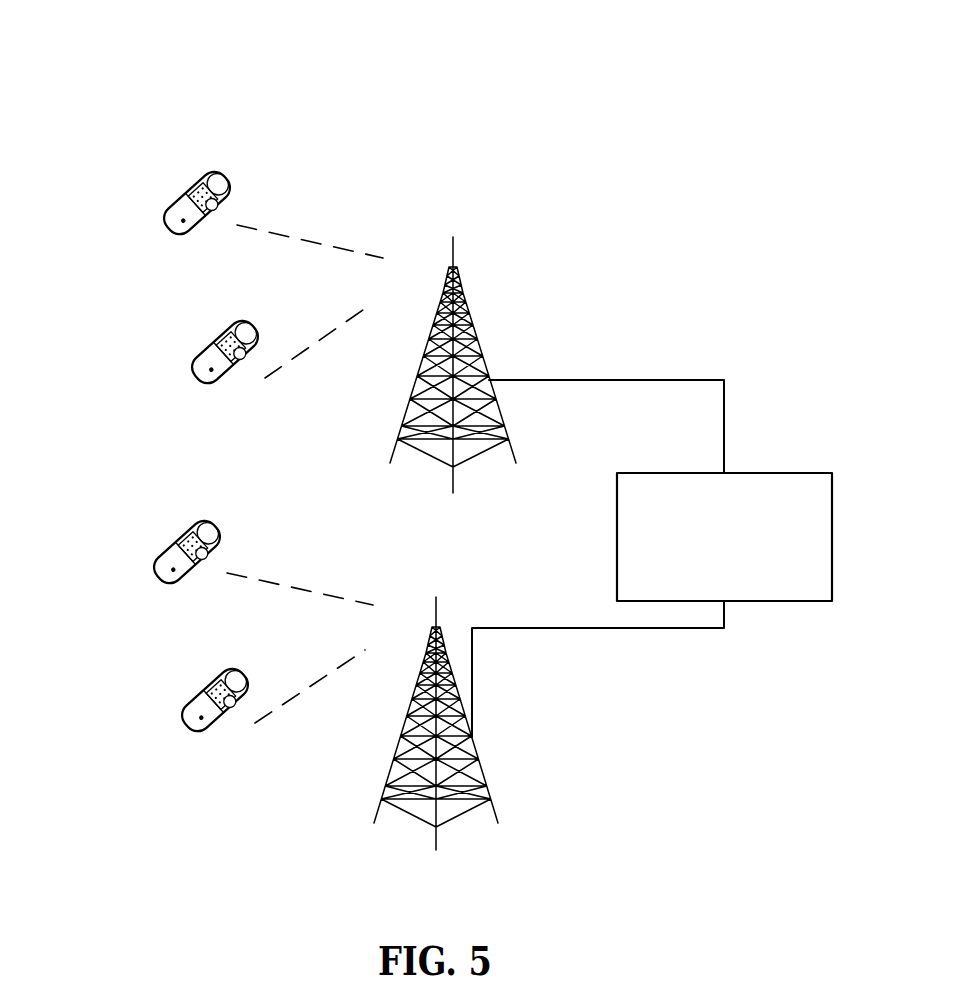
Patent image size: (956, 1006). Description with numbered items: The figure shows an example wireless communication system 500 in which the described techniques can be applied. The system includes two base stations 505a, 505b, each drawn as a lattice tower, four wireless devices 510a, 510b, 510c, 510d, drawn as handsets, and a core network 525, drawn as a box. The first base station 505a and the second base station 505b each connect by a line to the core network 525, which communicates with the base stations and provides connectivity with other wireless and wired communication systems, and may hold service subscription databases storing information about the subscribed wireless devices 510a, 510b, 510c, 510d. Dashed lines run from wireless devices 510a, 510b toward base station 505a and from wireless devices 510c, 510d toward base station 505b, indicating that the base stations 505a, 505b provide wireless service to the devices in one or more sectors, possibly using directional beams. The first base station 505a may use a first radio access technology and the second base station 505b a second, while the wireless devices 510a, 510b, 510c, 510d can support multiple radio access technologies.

The wireless communication system 500 is at (585, 88).
The first base station 505a is at (467, 320).
The second base station 505b is at (442, 628).
The wireless device 510a is at (198, 175).
The wireless device 510b is at (227, 325).
The wireless device 510c is at (135, 545).
The wireless device 510d is at (213, 673).
The core network 525 is at (642, 473).